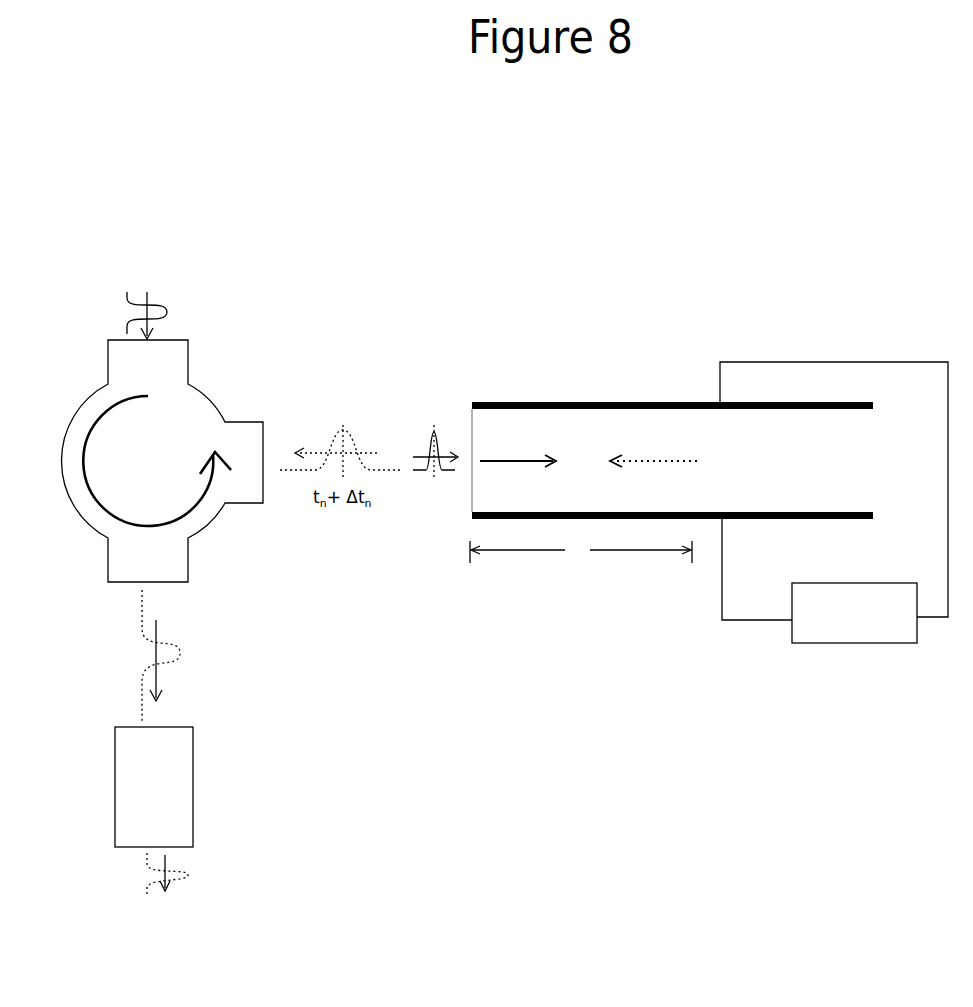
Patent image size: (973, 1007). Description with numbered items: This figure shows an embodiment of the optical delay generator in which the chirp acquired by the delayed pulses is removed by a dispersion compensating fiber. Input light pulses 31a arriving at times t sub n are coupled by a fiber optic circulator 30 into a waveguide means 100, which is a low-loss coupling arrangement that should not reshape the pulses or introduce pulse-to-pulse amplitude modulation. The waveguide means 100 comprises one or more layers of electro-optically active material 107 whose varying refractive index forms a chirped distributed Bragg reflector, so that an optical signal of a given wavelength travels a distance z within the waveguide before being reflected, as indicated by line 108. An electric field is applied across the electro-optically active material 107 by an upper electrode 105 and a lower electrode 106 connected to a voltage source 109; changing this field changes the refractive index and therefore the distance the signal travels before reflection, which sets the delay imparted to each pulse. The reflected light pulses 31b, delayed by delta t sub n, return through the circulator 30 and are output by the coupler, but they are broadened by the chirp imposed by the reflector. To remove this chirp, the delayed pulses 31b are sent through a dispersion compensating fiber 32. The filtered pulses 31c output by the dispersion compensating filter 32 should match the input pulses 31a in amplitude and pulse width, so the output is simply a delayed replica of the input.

The fiber optic circulator 30 is at (75, 413).
The light pulses 31a is at (430, 443).
The reflected light pulses 31b is at (178, 670).
The filtered pulses 31c is at (188, 875).
The dispersion compensating fiber 32 is at (193, 812).
The waveguide means 100 is at (472, 390).
The upper electrode 105 is at (714, 402).
The lower electrode 106 is at (707, 519).
The electro-optically active material 107 is at (603, 425).
The line indicating reflection distance 108 is at (680, 437).
The voltage source 109 is at (917, 633).